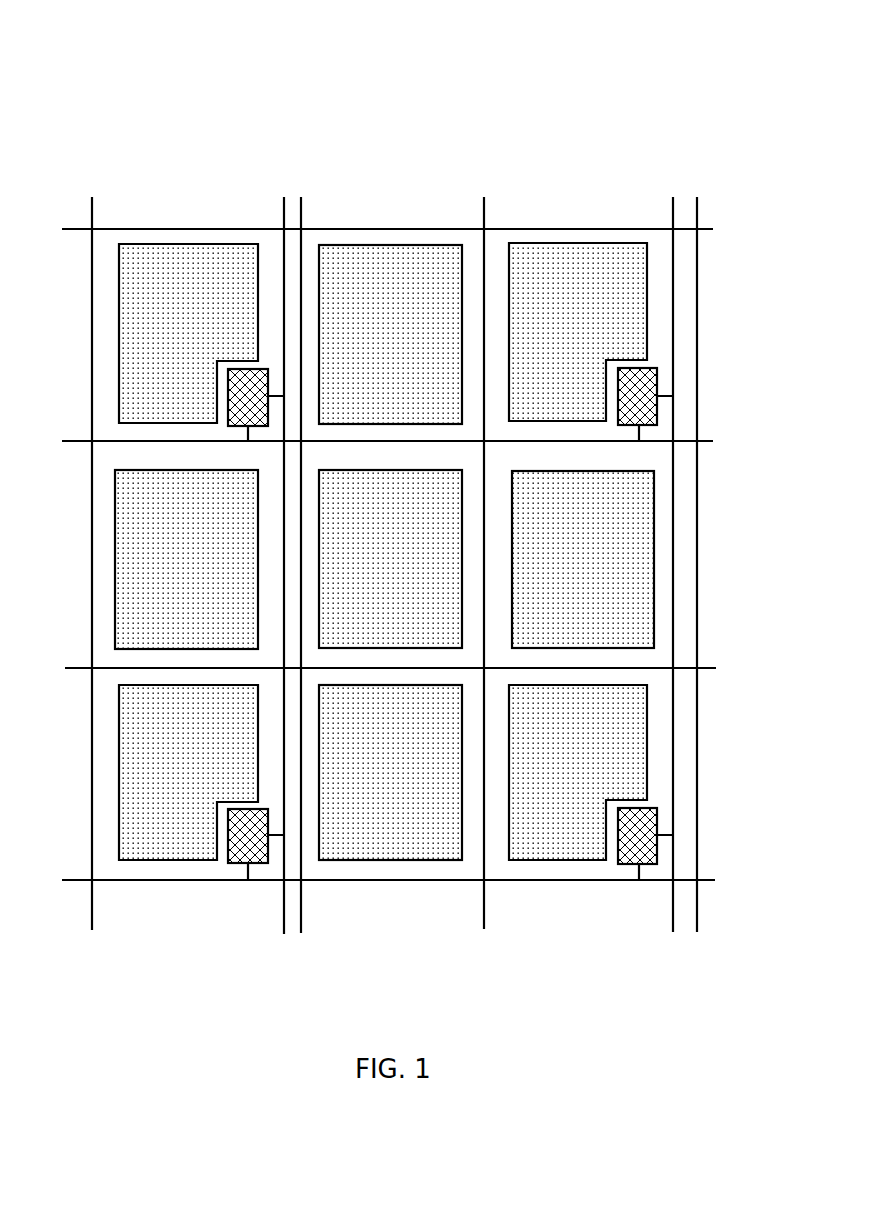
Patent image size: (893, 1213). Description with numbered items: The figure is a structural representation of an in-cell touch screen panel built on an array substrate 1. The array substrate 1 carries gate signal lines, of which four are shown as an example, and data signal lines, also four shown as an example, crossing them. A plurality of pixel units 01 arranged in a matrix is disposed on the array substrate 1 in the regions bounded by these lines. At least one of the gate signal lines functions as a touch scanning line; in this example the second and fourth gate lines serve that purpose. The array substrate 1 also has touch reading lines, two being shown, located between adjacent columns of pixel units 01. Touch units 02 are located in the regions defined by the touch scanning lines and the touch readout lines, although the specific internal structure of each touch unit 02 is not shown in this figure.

The array substrate 1 is at (421, 119).
The pixel units 01 is at (633, 319).
The touch units 02 is at (642, 833).